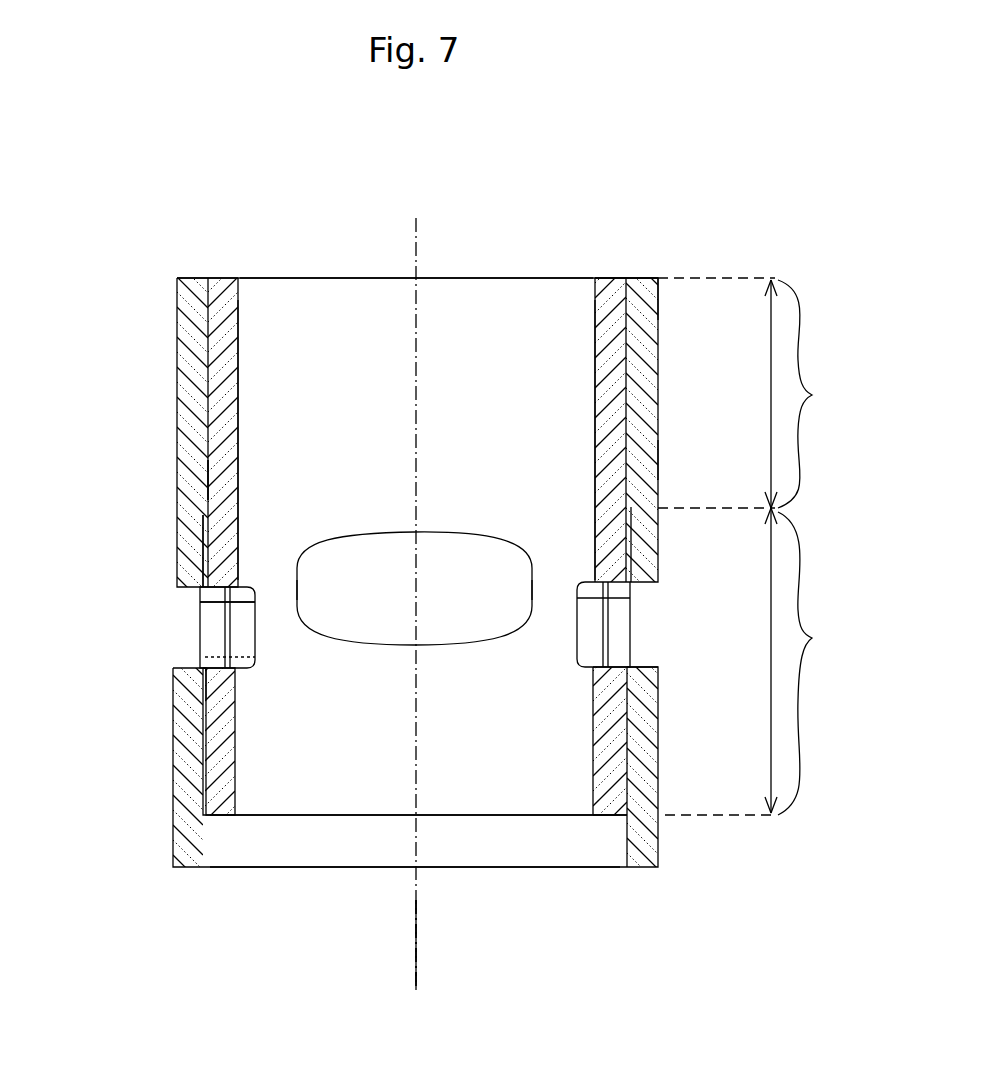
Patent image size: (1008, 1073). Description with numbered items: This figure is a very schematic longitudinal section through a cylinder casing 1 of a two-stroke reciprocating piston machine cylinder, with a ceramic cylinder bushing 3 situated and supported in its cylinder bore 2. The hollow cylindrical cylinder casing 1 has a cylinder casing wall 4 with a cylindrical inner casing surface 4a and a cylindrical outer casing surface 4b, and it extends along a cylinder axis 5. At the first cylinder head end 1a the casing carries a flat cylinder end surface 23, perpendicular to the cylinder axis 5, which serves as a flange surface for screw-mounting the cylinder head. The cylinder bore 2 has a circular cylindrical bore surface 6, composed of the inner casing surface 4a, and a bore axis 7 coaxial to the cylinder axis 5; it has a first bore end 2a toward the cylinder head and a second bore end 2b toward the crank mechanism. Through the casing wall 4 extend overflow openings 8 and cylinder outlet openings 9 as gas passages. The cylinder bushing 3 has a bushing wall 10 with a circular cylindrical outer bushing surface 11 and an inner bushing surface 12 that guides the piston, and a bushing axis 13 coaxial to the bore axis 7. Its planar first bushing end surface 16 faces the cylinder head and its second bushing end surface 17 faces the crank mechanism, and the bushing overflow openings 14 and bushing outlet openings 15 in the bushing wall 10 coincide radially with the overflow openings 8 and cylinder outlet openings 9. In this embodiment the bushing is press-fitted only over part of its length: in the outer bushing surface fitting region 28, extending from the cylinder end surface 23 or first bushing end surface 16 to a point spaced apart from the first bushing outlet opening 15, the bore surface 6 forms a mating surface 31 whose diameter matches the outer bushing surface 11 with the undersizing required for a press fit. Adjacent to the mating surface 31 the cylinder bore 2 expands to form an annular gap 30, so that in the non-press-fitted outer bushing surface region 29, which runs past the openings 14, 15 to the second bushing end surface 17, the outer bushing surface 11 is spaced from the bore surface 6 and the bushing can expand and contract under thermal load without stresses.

The cylinder casing 1 is at (640, 357).
The first cylinder head end 1a is at (645, 235).
The cylinder bore 2 is at (518, 335).
The first bore end 2a is at (468, 258).
The second bore end 2b is at (527, 867).
The cylinder bushing 3 is at (220, 370).
The cylinder casing wall 4 is at (193, 425).
The inner casing surface 4a is at (214, 494).
The outer casing surface 4b is at (660, 460).
The cylinder axis 5 is at (414, 970).
The bore surface 6 is at (220, 492).
The bore axis 7 is at (404, 987).
The overflow opening 8 is at (213, 642).
The cylinder outlet opening 9 is at (366, 560).
The bushing wall 10 is at (230, 745).
The outer bushing surface 11 is at (200, 778).
The inner bushing surface 12 is at (240, 722).
The bushing axis 13 is at (414, 970).
The bushing overflow opening 14 is at (237, 618).
The bushing outlet opening 15 is at (366, 560).
The first bushing end surface 16 is at (606, 275).
The second bushing end surface 17 is at (607, 815).
The cylinder end surface 23 is at (190, 277).
The outer bushing surface fitting region 28 is at (813, 394).
The non-press-fitted outer bushing surface region 29 is at (811, 663).
The annular gap 30 is at (205, 550).
The mating surface 31 is at (210, 400).